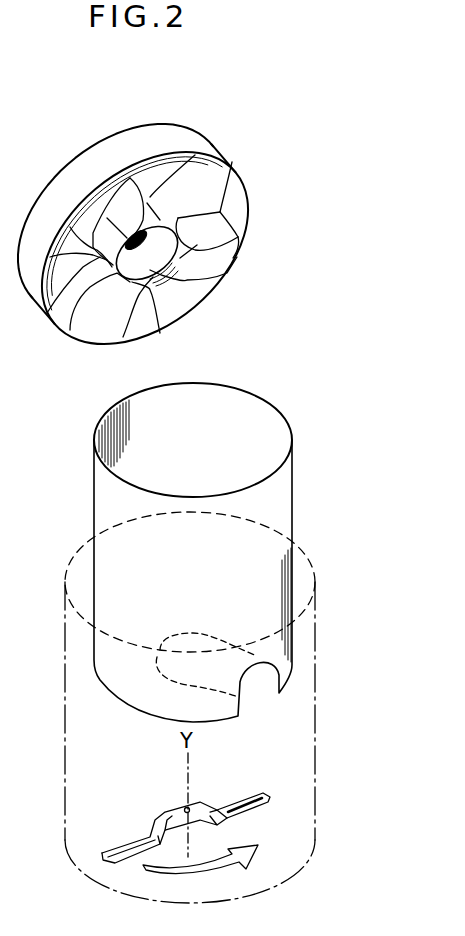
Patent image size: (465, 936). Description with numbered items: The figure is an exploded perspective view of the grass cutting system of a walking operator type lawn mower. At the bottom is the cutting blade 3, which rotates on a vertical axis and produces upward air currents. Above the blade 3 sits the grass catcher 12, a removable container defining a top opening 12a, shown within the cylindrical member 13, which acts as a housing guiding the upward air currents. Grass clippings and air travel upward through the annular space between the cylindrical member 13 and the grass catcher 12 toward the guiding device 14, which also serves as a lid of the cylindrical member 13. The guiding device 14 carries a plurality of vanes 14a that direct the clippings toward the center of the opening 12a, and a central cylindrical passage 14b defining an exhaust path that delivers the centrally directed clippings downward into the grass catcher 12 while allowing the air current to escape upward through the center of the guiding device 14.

The guiding device 14 is at (200, 128).
The vanes 14a is at (222, 227).
The cylindrical passage 14b is at (163, 250).
The grass catcher 12 is at (287, 412).
The top opening 12a is at (197, 413).
The cylindrical member 13 is at (316, 627).
The cutting blade 3 is at (165, 817).